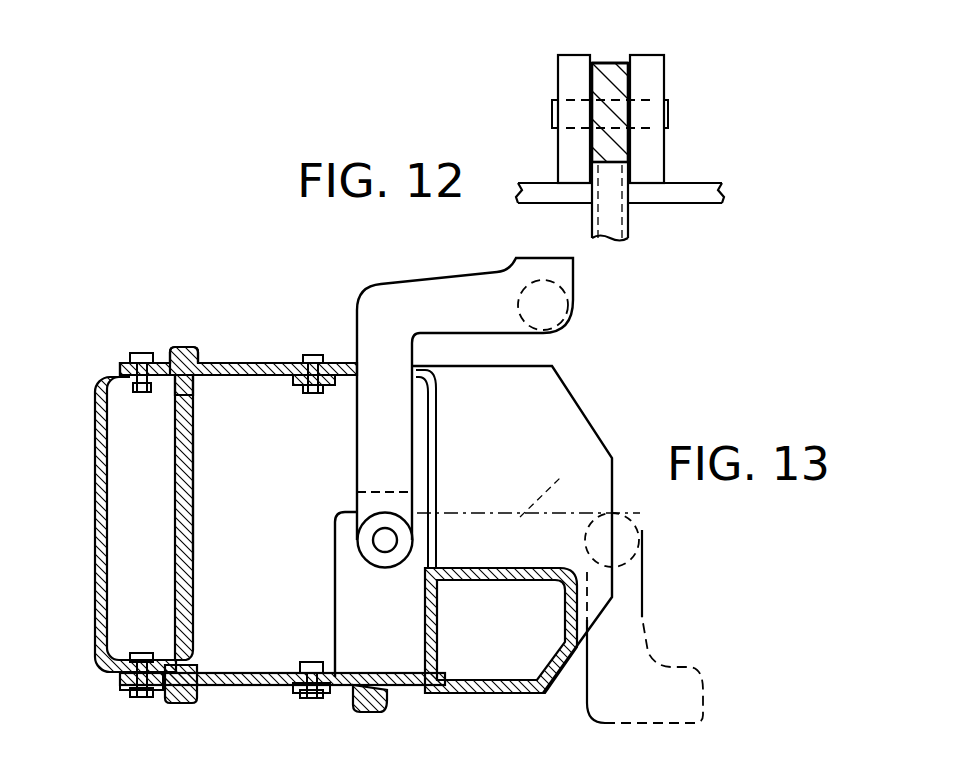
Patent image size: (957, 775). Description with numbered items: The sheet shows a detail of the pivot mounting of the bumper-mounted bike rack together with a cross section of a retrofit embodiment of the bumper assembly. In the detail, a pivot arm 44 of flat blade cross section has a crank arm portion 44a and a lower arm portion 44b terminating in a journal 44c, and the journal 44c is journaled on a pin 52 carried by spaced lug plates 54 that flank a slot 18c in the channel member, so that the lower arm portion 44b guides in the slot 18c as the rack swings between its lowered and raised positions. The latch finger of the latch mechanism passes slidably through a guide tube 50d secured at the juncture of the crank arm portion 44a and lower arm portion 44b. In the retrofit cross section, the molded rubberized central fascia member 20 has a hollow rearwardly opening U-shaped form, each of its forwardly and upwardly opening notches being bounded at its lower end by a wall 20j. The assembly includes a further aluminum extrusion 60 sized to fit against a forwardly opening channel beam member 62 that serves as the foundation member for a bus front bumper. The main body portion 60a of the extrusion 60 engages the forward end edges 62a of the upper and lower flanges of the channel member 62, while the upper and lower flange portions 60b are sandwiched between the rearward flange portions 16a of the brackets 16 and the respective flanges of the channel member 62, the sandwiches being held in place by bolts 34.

In FIG. 13, the bracket 16 is at (258, 362).
In FIG. 13, the rearward flange portion 16a is at (168, 358).
In FIG. 12, the slot 18c is at (610, 191).
In FIG. 13, the central fascia member 20 is at (655, 385).
In FIG. 13, the wall 20j is at (480, 580).
In FIG. 13, the bolt 34 is at (141, 362).
In FIG. 13, the pivot arm 44 is at (348, 423).
In FIG. 13, the crank arm portion 44a is at (648, 618).
In FIG. 12, the lower arm portion 44b is at (590, 80).
In FIG. 13, the lower arm portion 44b is at (560, 478).
In FIG. 12, the journal 44c is at (612, 62).
In FIG. 13, the guide tube 50d is at (640, 530).
In FIG. 12, the pin 52 is at (668, 113).
In FIG. 12, the lug plate 54 is at (653, 60).
In FIG. 13, the aluminum extrusion 60 is at (191, 568).
In FIG. 13, the main body portion 60a is at (194, 512).
In FIG. 13, the flange portion 60b is at (122, 376).
In FIG. 13, the channel beam member 62 is at (94, 461).
In FIG. 13, the forward end edge 62a is at (188, 379).